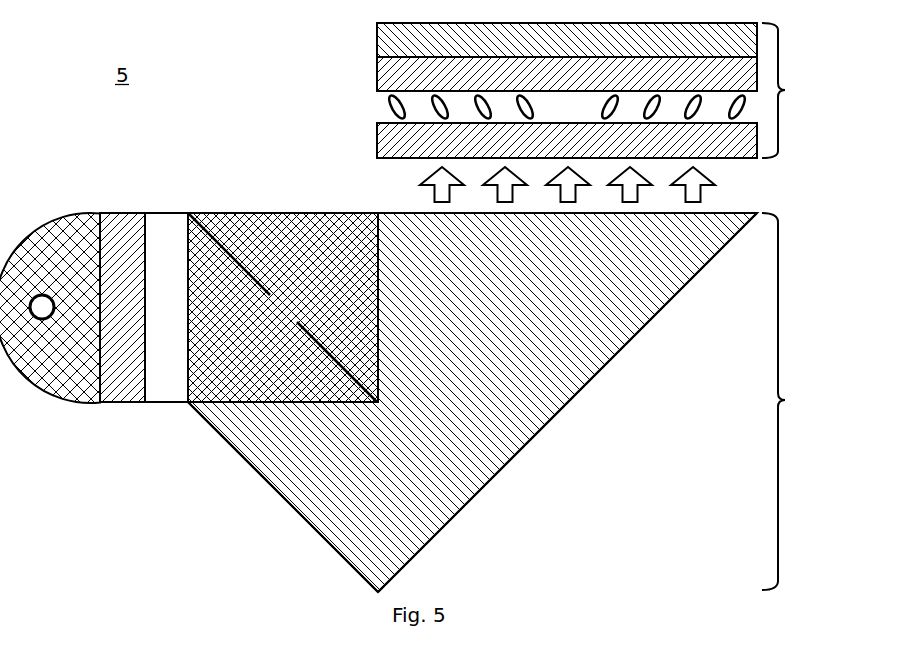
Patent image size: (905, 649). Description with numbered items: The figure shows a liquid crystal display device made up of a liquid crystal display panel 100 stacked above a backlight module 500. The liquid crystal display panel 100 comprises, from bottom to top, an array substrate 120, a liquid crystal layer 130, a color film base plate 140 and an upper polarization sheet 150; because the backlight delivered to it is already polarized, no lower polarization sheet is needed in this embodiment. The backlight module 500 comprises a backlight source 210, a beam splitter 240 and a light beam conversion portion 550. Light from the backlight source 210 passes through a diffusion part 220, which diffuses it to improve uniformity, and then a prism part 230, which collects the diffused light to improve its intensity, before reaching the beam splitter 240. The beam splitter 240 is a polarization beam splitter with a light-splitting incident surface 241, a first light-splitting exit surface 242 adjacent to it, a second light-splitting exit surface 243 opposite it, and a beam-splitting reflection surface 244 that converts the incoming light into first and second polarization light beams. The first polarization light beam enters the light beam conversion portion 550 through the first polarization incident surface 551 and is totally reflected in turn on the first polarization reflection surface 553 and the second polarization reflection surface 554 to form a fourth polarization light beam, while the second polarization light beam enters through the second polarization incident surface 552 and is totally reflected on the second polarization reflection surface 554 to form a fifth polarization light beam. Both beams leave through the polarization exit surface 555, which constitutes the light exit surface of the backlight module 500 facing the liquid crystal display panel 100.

The liquid crystal display panel 100 is at (603, 90).
The array substrate 120 is at (567, 140).
The liquid crystal layer 130 is at (567, 107).
The color film base plate 140 is at (567, 74).
The upper polarization sheet 150 is at (567, 40).
The backlight module 500 is at (414, 402).
The backlight source 210 is at (50, 308).
The diffusion part 220 is at (122, 307).
The prism part 230 is at (166, 307).
The beam splitter 240 is at (283, 307).
The light-splitting incident surface 241 is at (210, 307).
The first light-splitting exit surface 242 is at (283, 388).
The second light-splitting exit surface 243 is at (356, 307).
The beam-splitting reflection surface 244 is at (283, 308).
The light beam conversion portion 550 is at (472, 402).
The first polarization incident surface 551 is at (283, 414).
The second polarization incident surface 552 is at (400, 307).
The first polarization reflection surface 553 is at (283, 497).
The second polarization reflection surface 554 is at (567, 402).
The polarization exit surface 555 is at (472, 226).